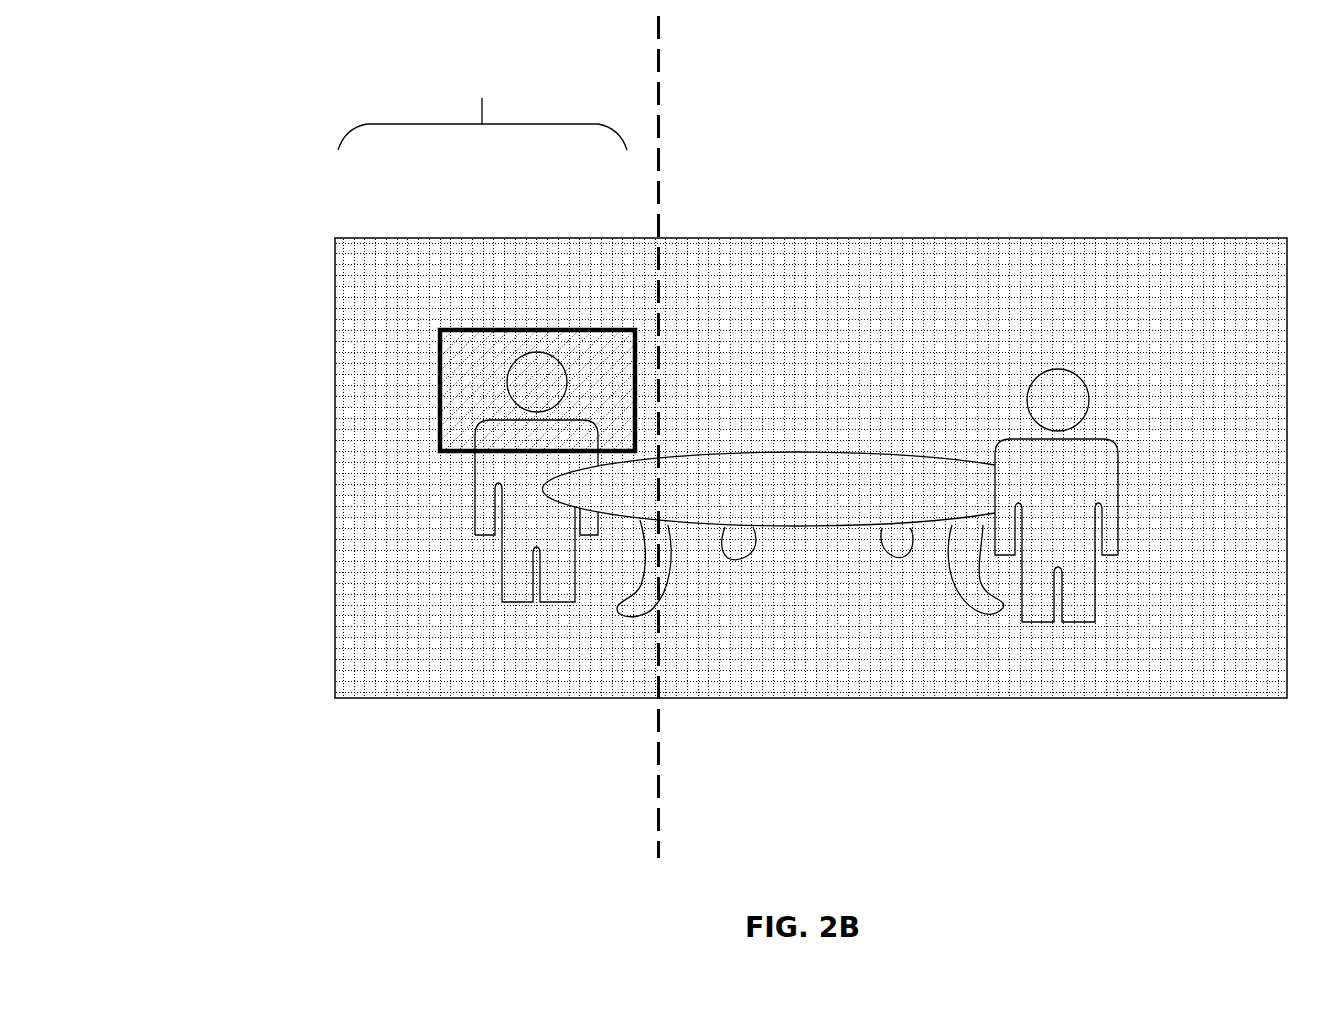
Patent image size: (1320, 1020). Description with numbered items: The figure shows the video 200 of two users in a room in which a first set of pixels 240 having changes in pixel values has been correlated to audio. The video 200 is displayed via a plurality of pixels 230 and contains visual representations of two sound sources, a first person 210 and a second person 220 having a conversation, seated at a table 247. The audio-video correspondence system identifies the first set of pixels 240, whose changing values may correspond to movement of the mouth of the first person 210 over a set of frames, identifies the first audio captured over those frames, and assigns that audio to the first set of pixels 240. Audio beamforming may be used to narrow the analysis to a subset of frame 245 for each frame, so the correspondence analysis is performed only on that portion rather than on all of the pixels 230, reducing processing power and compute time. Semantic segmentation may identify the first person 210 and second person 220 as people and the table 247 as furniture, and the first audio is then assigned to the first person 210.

The video 200 is at (373, 217).
The first person 210 is at (515, 565).
The second person 220 is at (1075, 600).
The pixels 230 is at (1030, 277).
The first set of pixels 240 is at (455, 405).
The subset of frame 245 is at (482, 89).
The table 247 is at (770, 497).